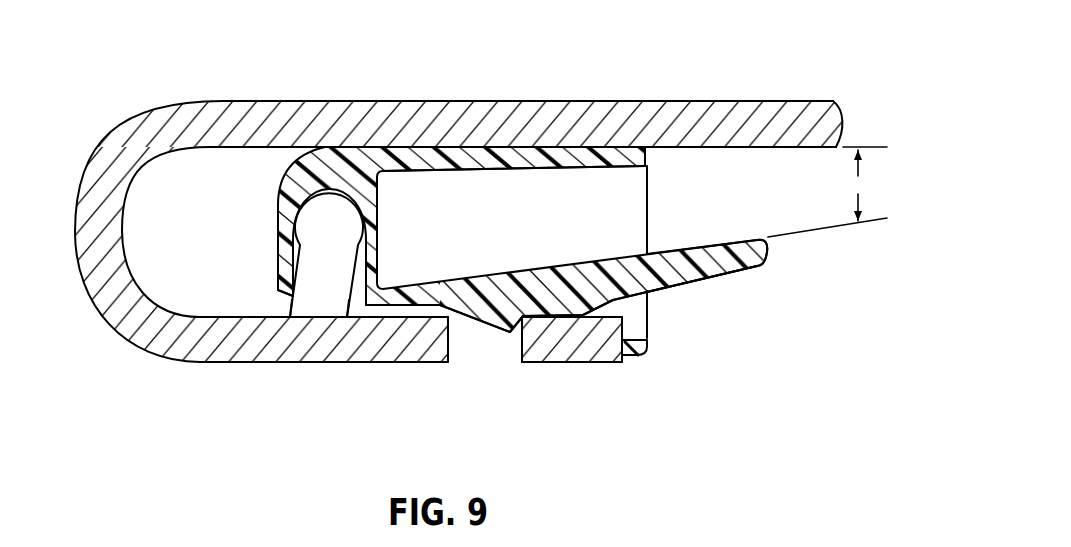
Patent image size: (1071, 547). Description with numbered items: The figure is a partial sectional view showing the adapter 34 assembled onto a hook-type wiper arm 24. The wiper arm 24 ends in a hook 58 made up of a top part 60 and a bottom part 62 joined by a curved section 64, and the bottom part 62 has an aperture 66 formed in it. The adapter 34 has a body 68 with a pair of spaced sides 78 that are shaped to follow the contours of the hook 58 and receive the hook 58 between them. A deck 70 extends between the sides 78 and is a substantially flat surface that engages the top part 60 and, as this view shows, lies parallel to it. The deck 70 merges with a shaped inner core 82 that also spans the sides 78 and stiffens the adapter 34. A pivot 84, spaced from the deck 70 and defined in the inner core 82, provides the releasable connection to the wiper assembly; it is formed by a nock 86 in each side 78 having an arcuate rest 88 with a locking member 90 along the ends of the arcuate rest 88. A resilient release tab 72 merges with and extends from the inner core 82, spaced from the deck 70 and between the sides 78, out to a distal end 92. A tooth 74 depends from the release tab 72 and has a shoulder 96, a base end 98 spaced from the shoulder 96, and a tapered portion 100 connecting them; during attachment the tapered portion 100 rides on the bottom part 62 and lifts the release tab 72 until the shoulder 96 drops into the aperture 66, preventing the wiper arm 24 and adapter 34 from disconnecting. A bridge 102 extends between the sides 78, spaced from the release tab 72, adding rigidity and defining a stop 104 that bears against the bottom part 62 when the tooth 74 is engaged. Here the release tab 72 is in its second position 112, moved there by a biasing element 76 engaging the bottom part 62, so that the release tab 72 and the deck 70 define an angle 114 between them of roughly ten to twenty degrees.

The wiper arm 24 is at (90, 158).
The adapter 34 is at (173, 176).
The hook 58 is at (755, 100).
The top part 60 is at (352, 110).
The bottom part 62 is at (328, 266).
The curved section 64 is at (113, 277).
The aperture 66 is at (493, 352).
The body 68 is at (250, 213).
The deck 70 is at (522, 148).
The release tab 72 is at (673, 266).
The tooth 74 is at (505, 327).
The biasing element 76 is at (552, 303).
The sides 78 is at (648, 205).
The inner core 82 is at (353, 192).
The pivot 84 is at (297, 205).
The nock 86 is at (290, 317).
The arcuate rest 88 is at (278, 242).
The locking member 90 is at (348, 317).
The distal end 92 is at (770, 253).
The shoulder 96 is at (522, 324).
The base end 98 is at (497, 300).
The tapered portion 100 is at (481, 322).
The bridge 102 is at (647, 352).
The stop 104 is at (620, 353).
The second position 112 is at (673, 266).
The angle 114 is at (827, 192).